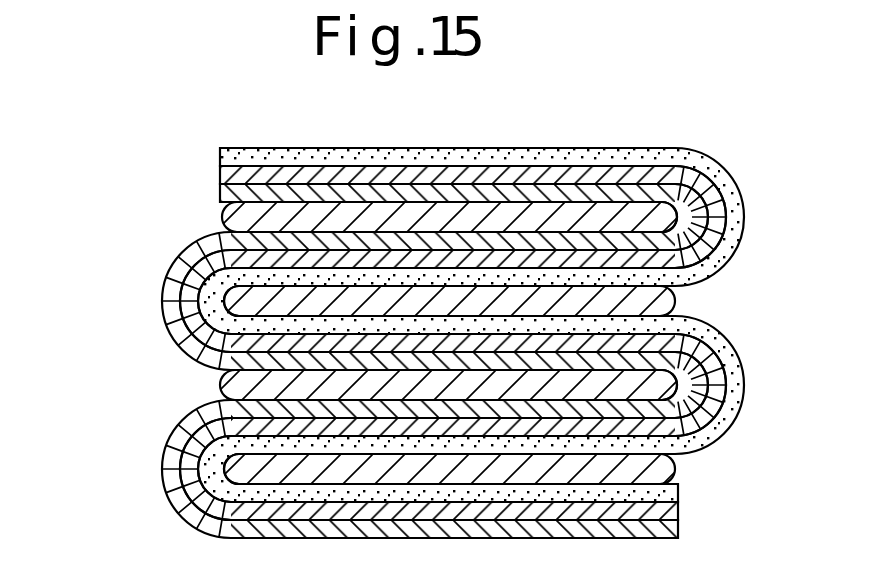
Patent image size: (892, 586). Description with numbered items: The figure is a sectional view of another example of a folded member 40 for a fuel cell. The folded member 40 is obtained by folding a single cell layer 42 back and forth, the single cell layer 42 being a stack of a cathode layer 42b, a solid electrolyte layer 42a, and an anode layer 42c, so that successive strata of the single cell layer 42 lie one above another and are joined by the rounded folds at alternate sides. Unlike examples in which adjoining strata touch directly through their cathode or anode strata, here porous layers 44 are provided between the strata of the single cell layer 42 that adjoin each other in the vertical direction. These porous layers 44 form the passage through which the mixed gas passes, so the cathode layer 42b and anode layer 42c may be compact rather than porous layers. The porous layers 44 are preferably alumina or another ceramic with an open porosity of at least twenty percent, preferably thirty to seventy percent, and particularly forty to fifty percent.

The folded member 40 is at (488, 124).
The single cell layer 42 is at (125, 140).
The solid electrolyte layer 42a is at (218, 175).
The cathode layer 42b is at (218, 157).
The anode layer 42c is at (218, 198).
The porous layer 44 is at (599, 212).